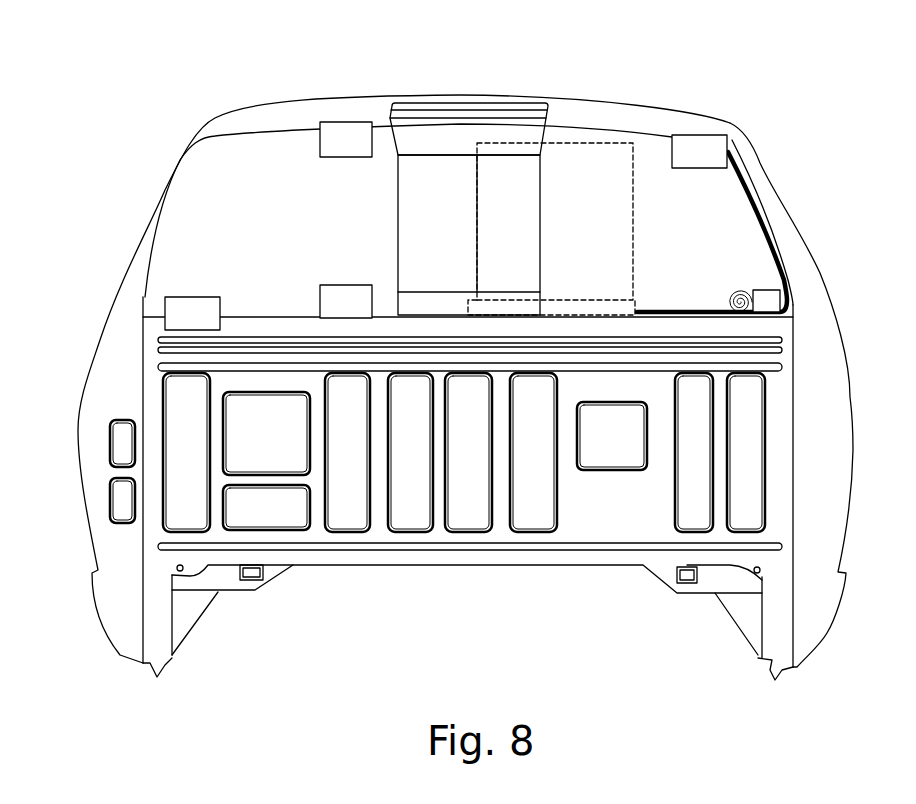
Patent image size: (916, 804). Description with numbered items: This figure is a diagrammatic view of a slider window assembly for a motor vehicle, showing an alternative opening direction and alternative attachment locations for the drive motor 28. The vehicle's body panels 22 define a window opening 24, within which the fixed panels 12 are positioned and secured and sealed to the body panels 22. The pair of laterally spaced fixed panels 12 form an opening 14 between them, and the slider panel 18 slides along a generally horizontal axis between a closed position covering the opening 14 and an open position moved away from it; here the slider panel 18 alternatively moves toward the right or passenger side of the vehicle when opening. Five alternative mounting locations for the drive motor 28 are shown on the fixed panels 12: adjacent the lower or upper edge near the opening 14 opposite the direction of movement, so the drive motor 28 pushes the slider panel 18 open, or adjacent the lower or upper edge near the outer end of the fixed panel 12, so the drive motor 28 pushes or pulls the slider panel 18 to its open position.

The fixed panel 12 is at (268, 165).
The opening 14 is at (400, 210).
The slider panel 18 is at (505, 182).
The body panel 22 is at (152, 227).
The window opening 24 is at (760, 245).
The drive motor 28 is at (357, 122).